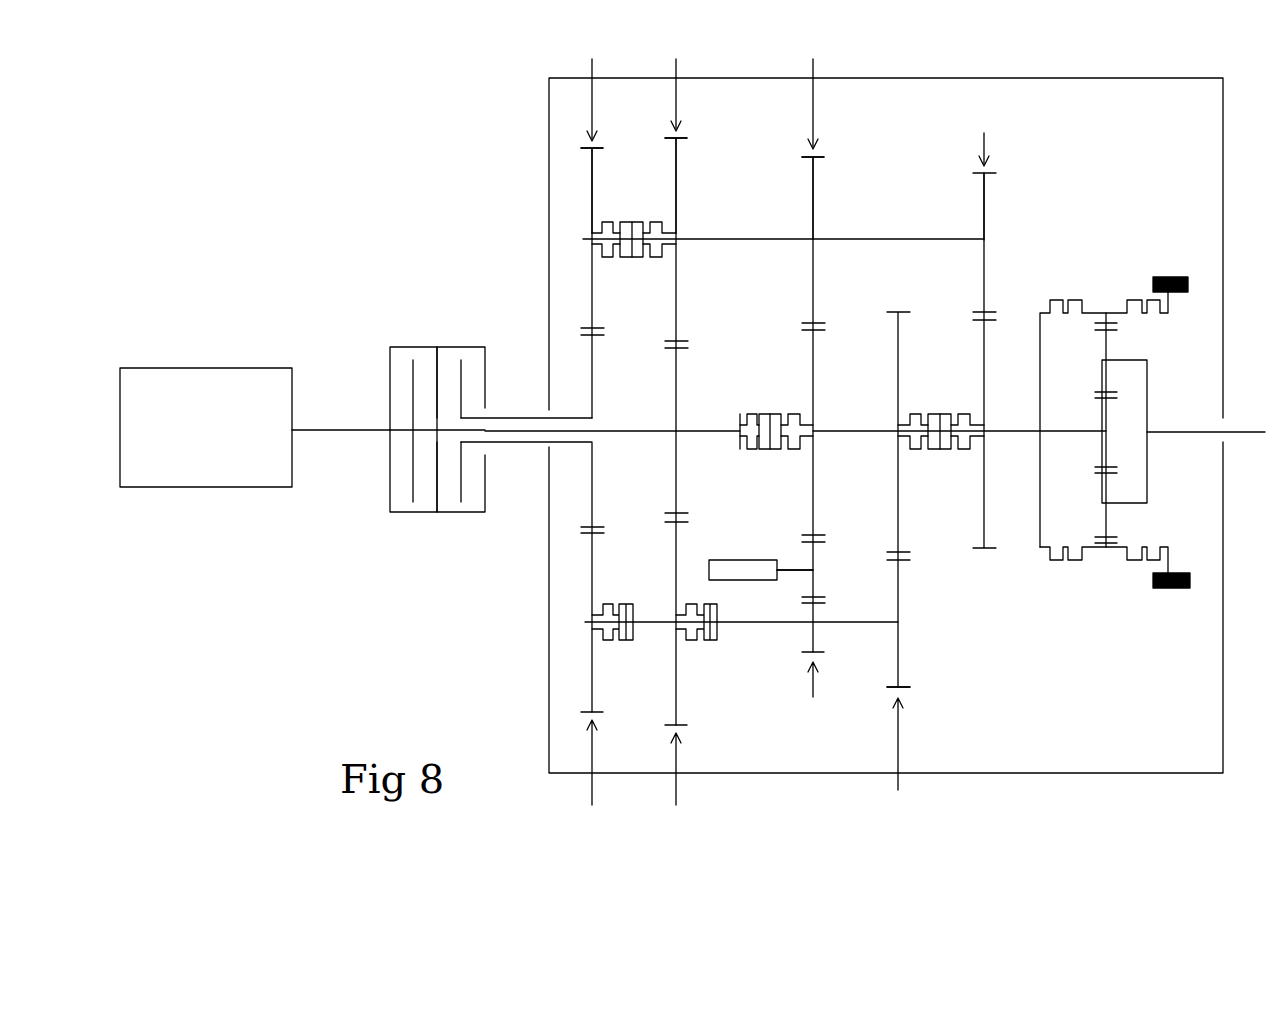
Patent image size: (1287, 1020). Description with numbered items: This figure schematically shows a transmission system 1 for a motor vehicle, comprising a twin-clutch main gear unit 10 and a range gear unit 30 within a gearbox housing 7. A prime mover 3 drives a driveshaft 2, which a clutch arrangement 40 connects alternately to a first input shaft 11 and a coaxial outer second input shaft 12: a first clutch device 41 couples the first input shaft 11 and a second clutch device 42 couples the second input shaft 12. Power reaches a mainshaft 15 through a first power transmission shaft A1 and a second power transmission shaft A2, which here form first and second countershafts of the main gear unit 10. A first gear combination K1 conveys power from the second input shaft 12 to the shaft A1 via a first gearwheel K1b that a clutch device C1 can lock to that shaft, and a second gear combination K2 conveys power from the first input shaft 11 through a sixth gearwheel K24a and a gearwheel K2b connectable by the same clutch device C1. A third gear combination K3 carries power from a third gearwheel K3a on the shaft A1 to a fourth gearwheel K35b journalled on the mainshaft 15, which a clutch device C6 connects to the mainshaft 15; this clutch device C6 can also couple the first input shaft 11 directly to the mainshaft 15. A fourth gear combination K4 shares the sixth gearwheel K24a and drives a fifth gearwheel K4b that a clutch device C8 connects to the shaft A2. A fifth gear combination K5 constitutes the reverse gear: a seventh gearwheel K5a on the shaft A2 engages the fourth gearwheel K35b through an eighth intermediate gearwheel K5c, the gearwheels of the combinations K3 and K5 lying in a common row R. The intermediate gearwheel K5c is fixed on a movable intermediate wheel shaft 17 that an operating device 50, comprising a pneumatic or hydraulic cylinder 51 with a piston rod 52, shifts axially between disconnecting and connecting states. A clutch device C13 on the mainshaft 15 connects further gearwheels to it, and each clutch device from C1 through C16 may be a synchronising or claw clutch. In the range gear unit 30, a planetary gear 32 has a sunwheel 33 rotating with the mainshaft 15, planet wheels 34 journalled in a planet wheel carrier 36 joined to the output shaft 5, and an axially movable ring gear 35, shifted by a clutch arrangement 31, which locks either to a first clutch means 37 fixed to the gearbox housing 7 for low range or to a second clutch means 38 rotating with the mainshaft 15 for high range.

The transmission system 1 is at (366, 139).
The driveshaft 2 is at (340, 418).
The prime mover 3 is at (203, 367).
The output shaft 5 is at (1248, 420).
The gearbox housing 7 is at (922, 78).
The twin-clutch main gear unit 10 is at (968, 594).
The first input shaft 11 is at (636, 425).
The second input shaft 12 is at (520, 415).
The mainshaft 15 is at (855, 425).
The intermediate wheel shaft 17 is at (818, 575).
The range gear unit 30 is at (1117, 380).
The clutch arrangement 31 is at (1112, 295).
The planetary gear 32 is at (1172, 508).
The sunwheel 33 is at (1103, 415).
The planet wheels 34 is at (1112, 345).
The ring gear 35 is at (1095, 320).
The planet wheel carrier 36 is at (1150, 398).
The first clutch means 37 is at (1145, 290).
The second clutch means 38 is at (1055, 300).
The clutch arrangement 40 is at (395, 337).
The first clutch device 41 is at (407, 513).
The second clutch device 42 is at (462, 513).
The operating device 50 is at (722, 540).
The pneumatic or hydraulic cylinder 51 is at (742, 560).
The piston rod 52 is at (779, 560).
The first gear combination K1 is at (595, 372).
The second gear combination K2 is at (679, 378).
The common row R is at (812, 340).
The third gear combination K3 is at (829, 145).
The first gearwheel K1b is at (588, 195).
The gearwheel K2b is at (682, 185).
The third gearwheel K3a is at (808, 212).
The sixth gearwheel K24a is at (678, 370).
The fourth gearwheel K35b is at (815, 355).
The eighth intermediate gearwheel K5c is at (818, 550).
The seventh gearwheel K5a is at (820, 645).
The fifth gearwheel K4b is at (682, 718).
The fifth gear combination K5 is at (811, 692).
The fourth gear combination K4 is at (675, 781).
The first power transmission shaft A1 is at (862, 238).
The second power transmission shaft A2 is at (648, 640).
The clutch device C1 is at (638, 208).
The clutch device C6 is at (773, 396).
The clutch device C8 is at (711, 656).
The clutch device C13 is at (950, 398).
The clutch device C16 is at (630, 590).